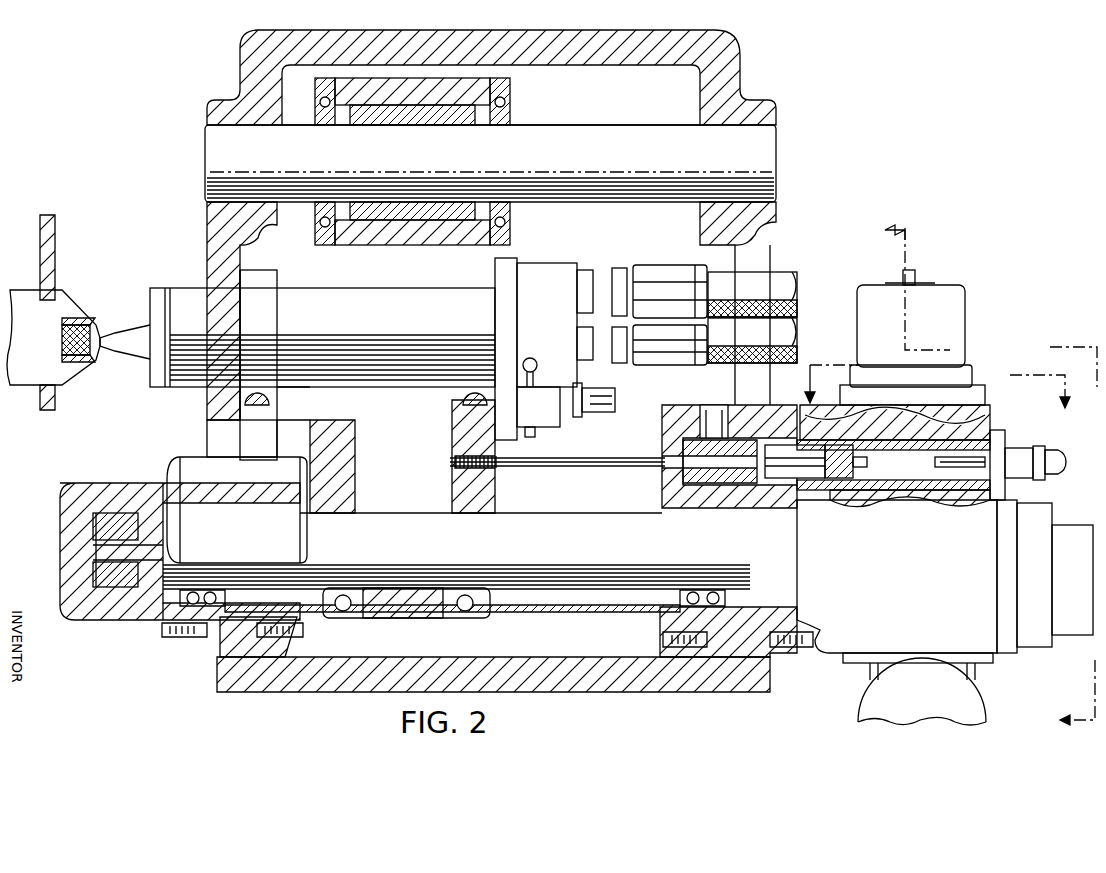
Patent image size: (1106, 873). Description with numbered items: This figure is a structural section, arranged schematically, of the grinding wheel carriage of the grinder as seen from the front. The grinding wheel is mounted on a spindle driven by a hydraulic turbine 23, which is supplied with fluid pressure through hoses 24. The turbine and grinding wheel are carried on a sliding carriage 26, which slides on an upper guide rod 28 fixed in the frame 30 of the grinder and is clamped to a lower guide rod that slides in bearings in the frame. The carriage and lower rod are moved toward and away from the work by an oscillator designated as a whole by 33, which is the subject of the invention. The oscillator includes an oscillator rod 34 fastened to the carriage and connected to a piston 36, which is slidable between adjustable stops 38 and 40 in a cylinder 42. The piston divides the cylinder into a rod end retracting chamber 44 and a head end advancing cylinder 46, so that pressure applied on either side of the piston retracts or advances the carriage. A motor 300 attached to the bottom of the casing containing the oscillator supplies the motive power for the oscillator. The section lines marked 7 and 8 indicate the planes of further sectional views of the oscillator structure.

The frame 30 is at (728, 58).
The sliding carriage 26 is at (508, 93).
The upper guide rod 28 is at (587, 142).
The hydraulic turbine 23 is at (548, 280).
The fluid pressure hoses 24 is at (775, 282).
The oscillator rod 34 is at (566, 463).
The adjustable stop 40 is at (706, 475).
The rod end retracting chamber 44 is at (815, 480).
The piston 36 is at (860, 462).
The head end advancing cylinder 46 is at (965, 415).
The cylinder 42 is at (900, 487).
The adjustable stop 38 is at (945, 468).
The oscillator 33 is at (1017, 532).
The motor 300 is at (967, 702).
The section line 7- 7 is at (967, 481).
The section line 8- 8 is at (940, 385).